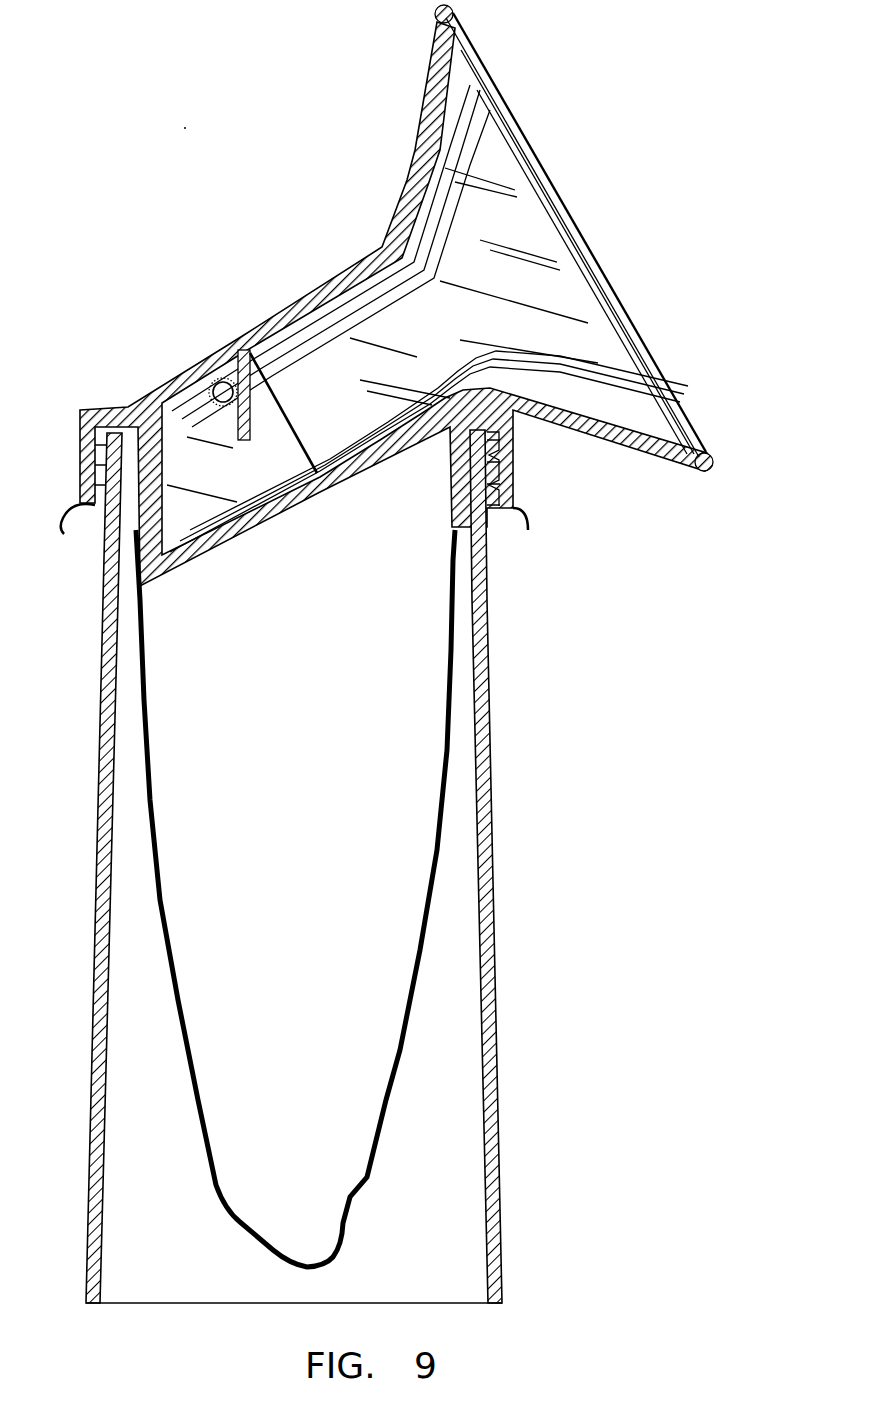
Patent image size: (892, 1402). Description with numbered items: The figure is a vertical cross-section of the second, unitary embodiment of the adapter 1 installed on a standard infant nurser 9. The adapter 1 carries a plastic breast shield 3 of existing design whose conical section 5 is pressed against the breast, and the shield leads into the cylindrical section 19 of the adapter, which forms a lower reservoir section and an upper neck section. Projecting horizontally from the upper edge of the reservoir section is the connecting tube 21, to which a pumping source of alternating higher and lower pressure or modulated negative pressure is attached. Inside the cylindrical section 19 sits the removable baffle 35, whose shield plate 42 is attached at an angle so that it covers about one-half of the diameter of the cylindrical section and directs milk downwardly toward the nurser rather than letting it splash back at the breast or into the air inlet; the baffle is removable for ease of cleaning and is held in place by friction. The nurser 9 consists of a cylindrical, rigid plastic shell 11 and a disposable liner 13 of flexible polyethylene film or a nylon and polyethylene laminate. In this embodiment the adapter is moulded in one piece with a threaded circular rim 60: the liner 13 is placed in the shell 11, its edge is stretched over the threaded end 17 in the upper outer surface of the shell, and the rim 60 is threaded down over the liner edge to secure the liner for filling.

The adapter 1 is at (268, 282).
The breast shield 3 is at (543, 162).
The conical section 5 is at (410, 152).
The infant nurser 9 is at (345, 866).
The shell 11 is at (493, 800).
The disposable liner 13 is at (520, 523).
The threaded end 17 is at (396, 295).
The cylindrical section 19 is at (396, 295).
The connecting tube 21 is at (210, 382).
The removable baffle 35 is at (265, 490).
The shield plate 42 is at (252, 418).
The threaded circular rim 60 is at (515, 445).